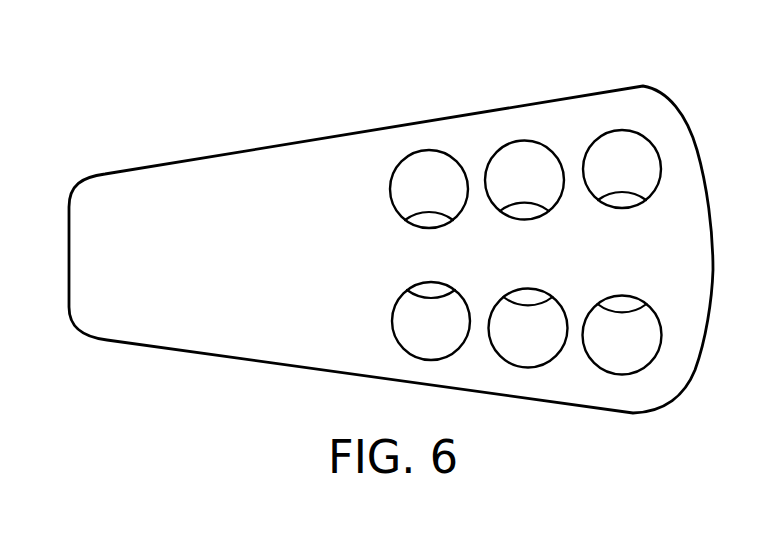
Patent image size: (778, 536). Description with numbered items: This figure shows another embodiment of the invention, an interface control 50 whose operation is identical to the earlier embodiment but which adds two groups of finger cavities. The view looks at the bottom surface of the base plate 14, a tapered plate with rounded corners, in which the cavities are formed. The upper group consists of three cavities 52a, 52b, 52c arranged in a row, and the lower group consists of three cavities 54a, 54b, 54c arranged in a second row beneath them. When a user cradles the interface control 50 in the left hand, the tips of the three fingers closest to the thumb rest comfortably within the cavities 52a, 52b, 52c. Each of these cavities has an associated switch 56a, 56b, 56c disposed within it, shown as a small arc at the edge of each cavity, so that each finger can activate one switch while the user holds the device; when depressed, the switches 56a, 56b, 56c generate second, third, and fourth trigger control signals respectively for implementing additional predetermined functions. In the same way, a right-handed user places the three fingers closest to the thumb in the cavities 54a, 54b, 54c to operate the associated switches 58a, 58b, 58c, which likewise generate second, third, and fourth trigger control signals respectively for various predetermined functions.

The interface control 50 is at (385, 92).
The base plate 14 is at (198, 274).
The cavity 52a is at (455, 198).
The cavity 52b is at (551, 190).
The cavity 52c is at (647, 181).
The cavity 54a is at (456, 330).
The cavity 54b is at (551, 338).
The cavity 54c is at (650, 345).
The switch 56a is at (433, 226).
The switch 56b is at (527, 218).
The switch 56c is at (621, 210).
The switch 58a is at (430, 283).
The switch 58b is at (527, 292).
The switch 58c is at (622, 300).